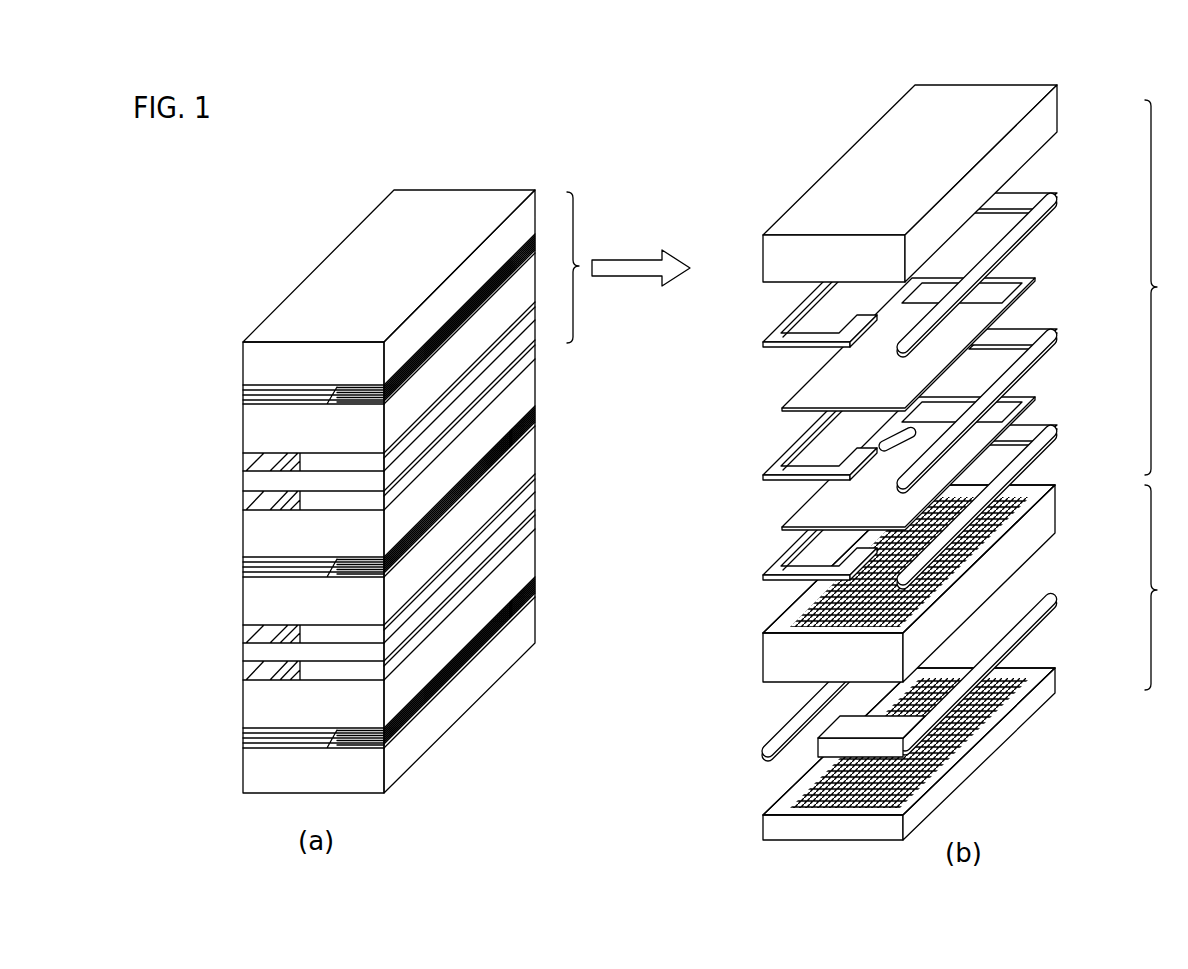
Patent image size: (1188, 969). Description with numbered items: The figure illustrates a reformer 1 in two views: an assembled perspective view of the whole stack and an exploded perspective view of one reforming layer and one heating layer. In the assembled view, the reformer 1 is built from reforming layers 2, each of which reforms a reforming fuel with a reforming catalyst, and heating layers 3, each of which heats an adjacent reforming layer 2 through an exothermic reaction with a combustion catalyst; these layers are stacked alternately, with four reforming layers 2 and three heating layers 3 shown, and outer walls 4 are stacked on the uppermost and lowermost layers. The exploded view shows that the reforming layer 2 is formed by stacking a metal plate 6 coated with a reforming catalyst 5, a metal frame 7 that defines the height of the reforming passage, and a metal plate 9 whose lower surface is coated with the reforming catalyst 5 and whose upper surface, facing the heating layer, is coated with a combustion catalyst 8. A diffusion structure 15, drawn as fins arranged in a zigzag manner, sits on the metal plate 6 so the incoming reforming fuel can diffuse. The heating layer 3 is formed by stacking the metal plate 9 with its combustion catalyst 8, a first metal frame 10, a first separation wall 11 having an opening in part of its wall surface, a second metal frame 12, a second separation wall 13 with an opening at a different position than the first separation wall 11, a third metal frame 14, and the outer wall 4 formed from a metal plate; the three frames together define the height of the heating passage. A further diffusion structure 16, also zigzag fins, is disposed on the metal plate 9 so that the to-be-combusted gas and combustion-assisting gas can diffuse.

The reformer 1 is at (500, 164).
The reforming layer 2 is at (233, 430).
The heating layer 3 is at (233, 363).
The outer wall 4 is at (1057, 115).
The reforming catalyst 5 is at (1055, 668).
The metal plate 6 is at (1055, 688).
The metal frame 7 is at (1055, 595).
The combustion catalyst 8 is at (1055, 502).
The metal plate 9 is at (1055, 525).
The first metal frame 10 is at (1055, 428).
The first separation wall 11 is at (1035, 399).
The second metal frame 12 is at (1057, 330).
The second separation wall 13 is at (1035, 280).
The third metal frame 14 is at (1057, 196).
The diffusion structure 15 is at (975, 757).
The diffusion structure 16 is at (987, 560).